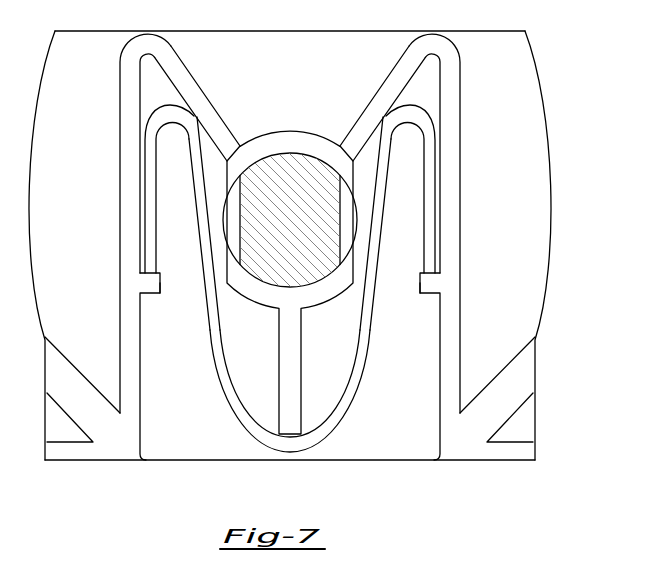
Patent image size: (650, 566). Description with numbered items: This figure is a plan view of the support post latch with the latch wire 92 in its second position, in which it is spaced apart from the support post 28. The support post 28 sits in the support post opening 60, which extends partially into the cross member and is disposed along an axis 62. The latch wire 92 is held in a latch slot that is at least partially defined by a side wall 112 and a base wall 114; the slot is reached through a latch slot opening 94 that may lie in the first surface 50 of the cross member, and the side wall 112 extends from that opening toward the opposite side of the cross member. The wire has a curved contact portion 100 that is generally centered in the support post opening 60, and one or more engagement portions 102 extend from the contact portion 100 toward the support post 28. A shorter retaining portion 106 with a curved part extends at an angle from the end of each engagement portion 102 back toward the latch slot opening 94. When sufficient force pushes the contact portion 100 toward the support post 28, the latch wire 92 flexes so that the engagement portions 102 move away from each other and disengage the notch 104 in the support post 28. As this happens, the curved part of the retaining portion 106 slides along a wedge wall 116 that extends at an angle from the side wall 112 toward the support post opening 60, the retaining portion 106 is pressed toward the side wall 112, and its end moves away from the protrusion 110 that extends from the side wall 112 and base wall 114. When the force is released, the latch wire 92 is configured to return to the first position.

The support post 28 is at (301, 258).
The first surface 50 is at (82, 462).
The support post opening 60 is at (318, 162).
The axis 62 is at (285, 222).
The latch wire 92 is at (240, 427).
The latch slot opening 94 is at (196, 461).
The contact portion 100 is at (300, 454).
The engagement portion 102 is at (195, 192).
The notch 104 is at (240, 210).
The retaining portion 106 is at (146, 182).
The protrusion 110 is at (160, 297).
The side wall 112 is at (120, 100).
The base wall 114 is at (413, 437).
The wedge wall 116 is at (386, 76).